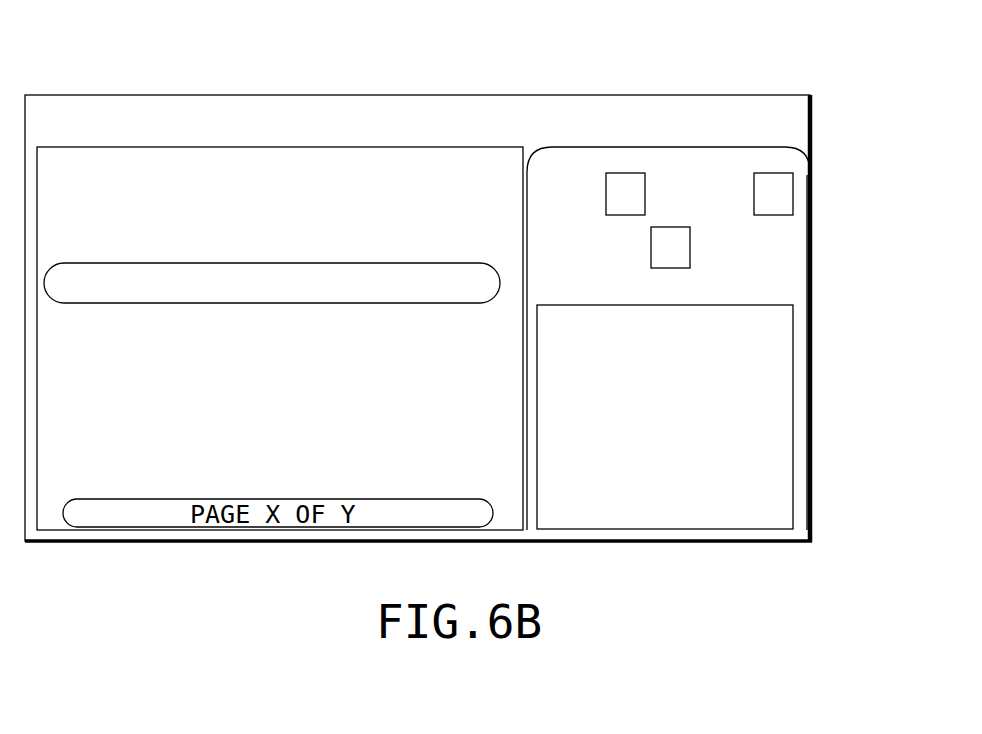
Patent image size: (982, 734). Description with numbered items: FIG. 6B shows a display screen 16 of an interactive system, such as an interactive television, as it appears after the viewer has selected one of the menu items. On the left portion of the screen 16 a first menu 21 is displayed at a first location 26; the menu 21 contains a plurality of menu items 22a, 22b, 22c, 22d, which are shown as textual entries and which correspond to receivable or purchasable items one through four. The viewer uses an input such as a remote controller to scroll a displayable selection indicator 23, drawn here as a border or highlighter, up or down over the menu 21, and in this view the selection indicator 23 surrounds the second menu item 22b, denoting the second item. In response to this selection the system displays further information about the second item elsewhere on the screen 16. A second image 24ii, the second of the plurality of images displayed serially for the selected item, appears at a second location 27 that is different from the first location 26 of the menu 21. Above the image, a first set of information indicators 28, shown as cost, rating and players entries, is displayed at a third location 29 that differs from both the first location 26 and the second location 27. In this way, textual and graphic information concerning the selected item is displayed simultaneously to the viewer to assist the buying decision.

The display screen 16 is at (622, 95).
The first menu 21 is at (153, 176).
The menu item 22a is at (157, 193).
The menu item 22b is at (155, 286).
The menu item 22c is at (157, 375).
The menu item 22d is at (157, 469).
The selection indicator 23 is at (417, 263).
The second image 24ii is at (753, 404).
The first location 26 is at (441, 387).
The second location 27 is at (600, 512).
The first set of information indicators 28 is at (732, 238).
The third location 29 is at (761, 283).